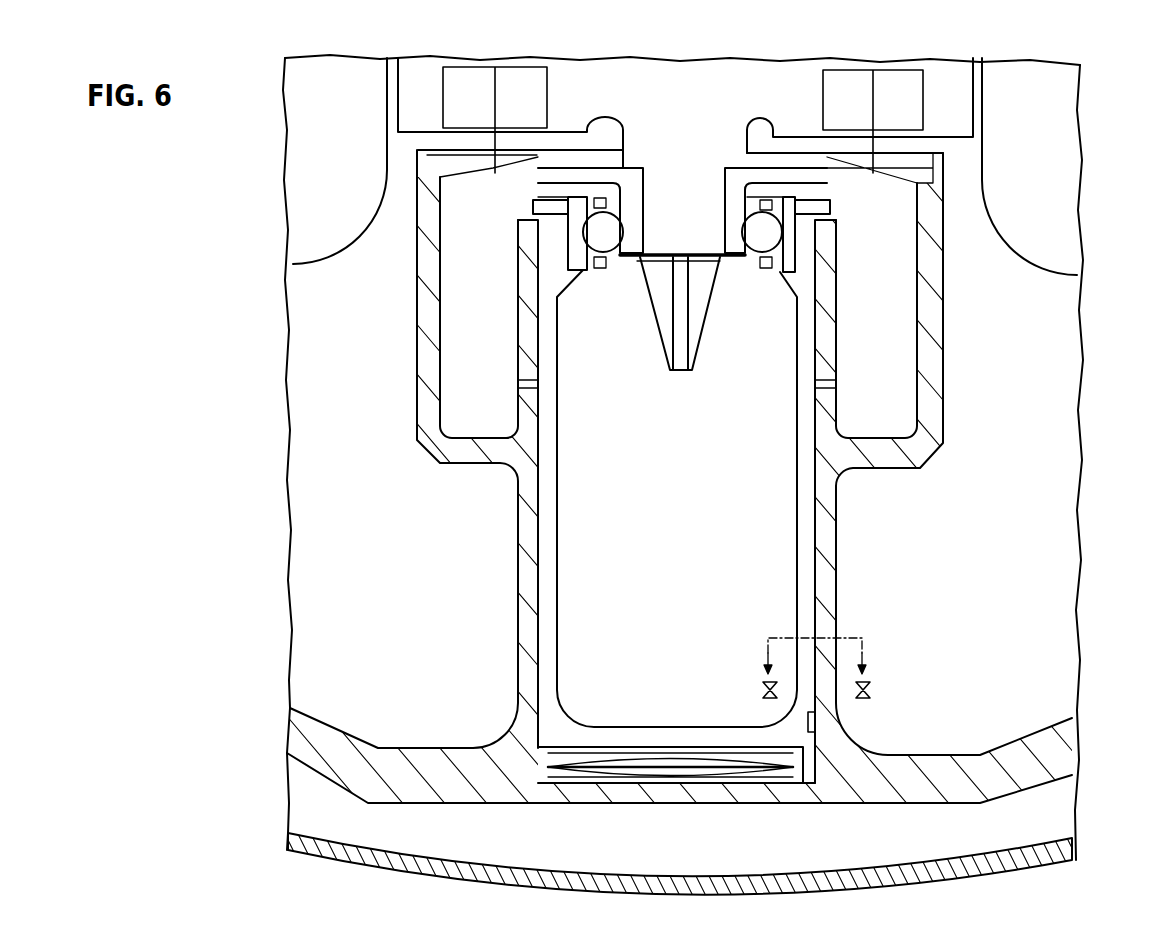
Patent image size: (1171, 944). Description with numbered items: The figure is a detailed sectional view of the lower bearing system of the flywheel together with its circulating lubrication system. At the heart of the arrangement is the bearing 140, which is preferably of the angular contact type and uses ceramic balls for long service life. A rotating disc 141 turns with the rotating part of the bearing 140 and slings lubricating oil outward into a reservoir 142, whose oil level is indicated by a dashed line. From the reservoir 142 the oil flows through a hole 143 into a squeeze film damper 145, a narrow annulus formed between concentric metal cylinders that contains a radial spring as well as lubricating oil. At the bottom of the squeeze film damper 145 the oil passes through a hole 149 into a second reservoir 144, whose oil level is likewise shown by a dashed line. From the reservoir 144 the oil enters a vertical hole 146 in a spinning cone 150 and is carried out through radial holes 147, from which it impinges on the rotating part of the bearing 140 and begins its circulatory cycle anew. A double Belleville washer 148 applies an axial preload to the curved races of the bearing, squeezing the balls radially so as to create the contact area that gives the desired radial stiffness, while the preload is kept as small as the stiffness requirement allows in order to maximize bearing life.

The bearing 140 is at (792, 222).
The rotating disc 141 is at (873, 177).
The reservoir 142 is at (890, 312).
The hole 143 is at (813, 362).
The reservoir 144 is at (747, 438).
The squeeze film damper 145 is at (813, 478).
The vertical hole 146 is at (678, 342).
The radial holes 147 is at (590, 253).
The double Belleville washer 148 is at (602, 745).
The hole 149 is at (840, 723).
The spinning cone 150 is at (707, 283).